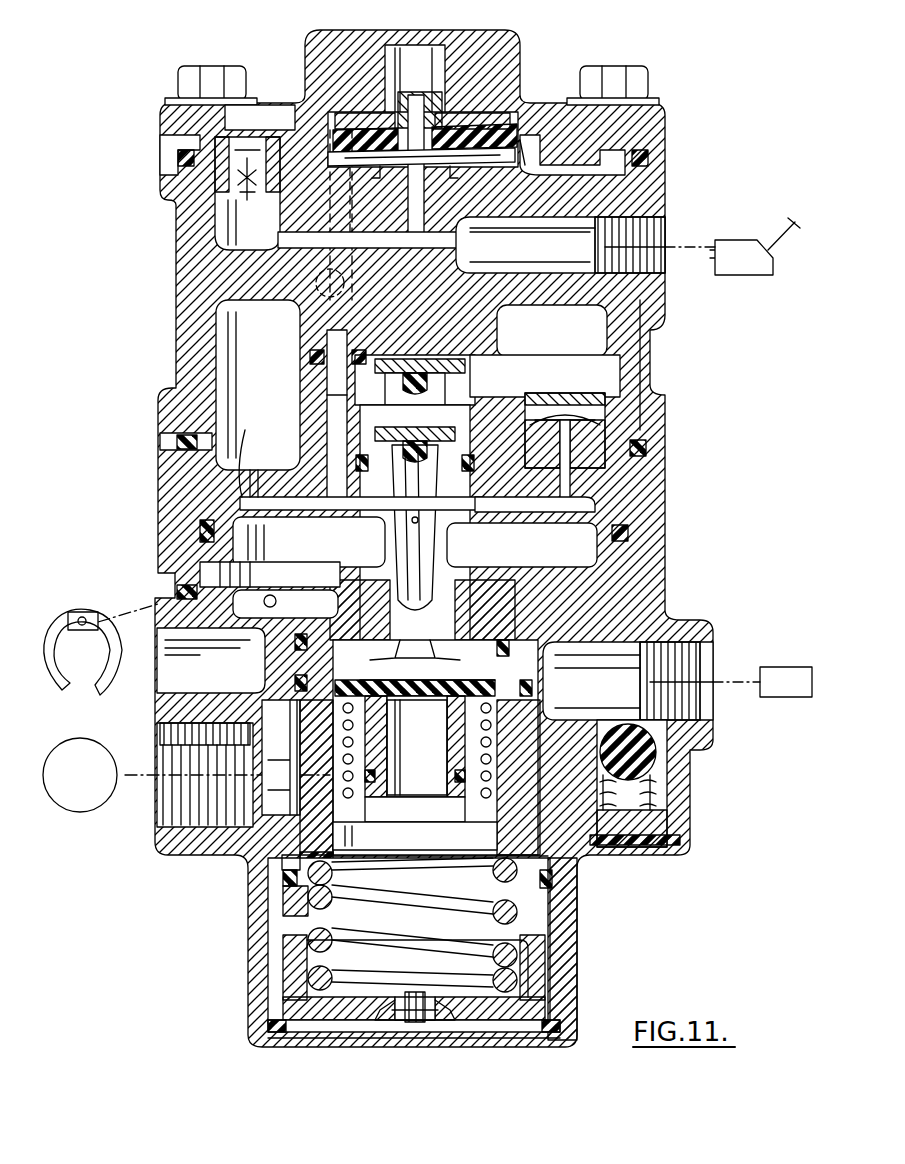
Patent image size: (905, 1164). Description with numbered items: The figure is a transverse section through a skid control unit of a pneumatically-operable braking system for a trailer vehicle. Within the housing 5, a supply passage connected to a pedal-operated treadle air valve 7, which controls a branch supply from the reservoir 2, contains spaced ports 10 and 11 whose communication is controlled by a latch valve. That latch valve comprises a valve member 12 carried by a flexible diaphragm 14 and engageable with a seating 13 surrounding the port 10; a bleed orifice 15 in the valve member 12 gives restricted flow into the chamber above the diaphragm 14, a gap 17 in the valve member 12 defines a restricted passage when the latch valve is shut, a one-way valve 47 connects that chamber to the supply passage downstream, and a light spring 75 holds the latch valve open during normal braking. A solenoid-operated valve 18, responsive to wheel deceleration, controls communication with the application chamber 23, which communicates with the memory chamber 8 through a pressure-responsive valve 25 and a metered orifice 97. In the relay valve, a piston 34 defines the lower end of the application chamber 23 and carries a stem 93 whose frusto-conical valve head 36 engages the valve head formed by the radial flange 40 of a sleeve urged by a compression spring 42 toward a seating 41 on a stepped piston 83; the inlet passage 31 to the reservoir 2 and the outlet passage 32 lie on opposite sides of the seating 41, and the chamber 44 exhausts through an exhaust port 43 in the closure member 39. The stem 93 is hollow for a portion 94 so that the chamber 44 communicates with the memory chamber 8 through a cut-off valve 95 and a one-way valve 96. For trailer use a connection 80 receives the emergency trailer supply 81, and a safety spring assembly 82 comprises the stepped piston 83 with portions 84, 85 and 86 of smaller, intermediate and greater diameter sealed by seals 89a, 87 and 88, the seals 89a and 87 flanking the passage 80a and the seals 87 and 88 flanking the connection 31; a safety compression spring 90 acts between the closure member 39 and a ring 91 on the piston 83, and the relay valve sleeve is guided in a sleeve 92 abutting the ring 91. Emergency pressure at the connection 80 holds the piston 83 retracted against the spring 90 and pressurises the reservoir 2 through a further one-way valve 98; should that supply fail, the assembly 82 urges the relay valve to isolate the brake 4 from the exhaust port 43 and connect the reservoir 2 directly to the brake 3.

The reservoir 2 is at (75, 805).
The brake 3 is at (85, 615).
The brake 4 is at (60, 680).
The housing 5 is at (575, 898).
The pedal-operated treadle air valve 7 is at (735, 258).
The memory chamber 8 is at (272, 366).
The port 10 is at (430, 176).
The port 11 is at (300, 148).
The valve member 12 is at (395, 102).
The seating 13 is at (490, 126).
The flexible diaphragm 14 is at (510, 146).
The bleed orifice 15 is at (428, 96).
The gap 17 is at (385, 168).
The solenoid-operated valve 18 is at (318, 282).
The application chamber 23 is at (256, 448).
The pressure-responsive valve 25 is at (600, 415).
The inlet passage 31 is at (185, 790).
The outlet passage 32 is at (265, 600).
The piston 34 is at (207, 510).
The valve head 36 is at (372, 688).
The closure member 39 is at (305, 1003).
The radial flange 40 is at (417, 747).
The seating 41 is at (300, 645).
The compression spring 42 is at (340, 745).
The exhaust port 43 is at (398, 1010).
The chamber 44 is at (310, 565).
The one-way valve 47 is at (248, 190).
The light spring 75 is at (462, 166).
The connection 80 is at (620, 655).
The passage 80a is at (545, 605).
The emergency trailer supply 81 is at (785, 690).
The safety spring assembly 82 is at (518, 922).
The stepped piston 83 is at (292, 860).
The portion of smaller diameter 84 is at (522, 545).
The portion of intermediate diameter 85 is at (300, 700).
The portion of greater diameter 86 is at (292, 900).
The seal 87 is at (298, 690).
The seal 88 is at (285, 875).
The seal 89a is at (332, 600).
The safety compression spring 90 is at (320, 970).
The abutment ring 91 is at (330, 856).
The sleeve 92 is at (345, 825).
The stem 93 is at (440, 650).
The hollow portion 94 is at (435, 541).
The cut-off valve 95 is at (422, 501).
The one-way valve 96 is at (425, 365).
The metered orifice 97 is at (258, 497).
The one-way valve 98 is at (640, 775).